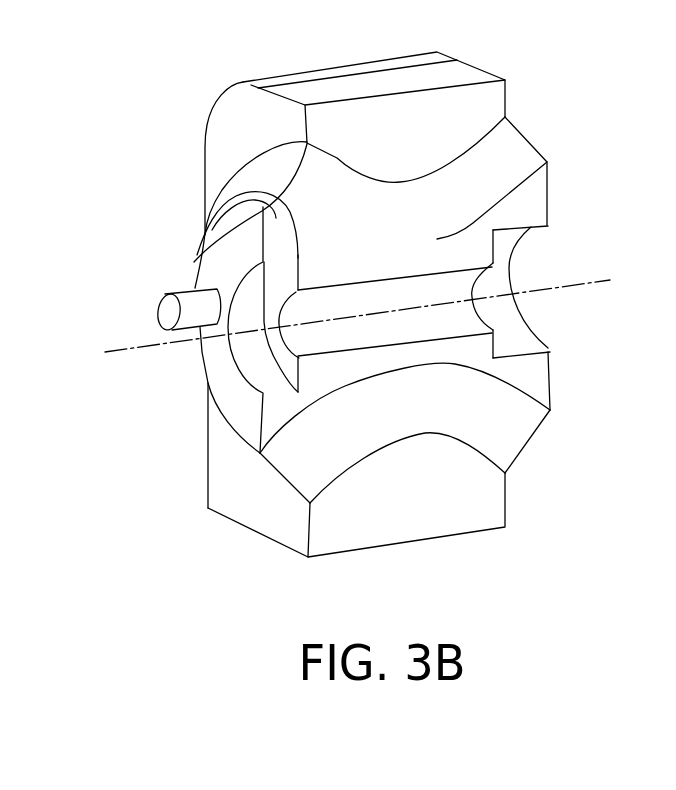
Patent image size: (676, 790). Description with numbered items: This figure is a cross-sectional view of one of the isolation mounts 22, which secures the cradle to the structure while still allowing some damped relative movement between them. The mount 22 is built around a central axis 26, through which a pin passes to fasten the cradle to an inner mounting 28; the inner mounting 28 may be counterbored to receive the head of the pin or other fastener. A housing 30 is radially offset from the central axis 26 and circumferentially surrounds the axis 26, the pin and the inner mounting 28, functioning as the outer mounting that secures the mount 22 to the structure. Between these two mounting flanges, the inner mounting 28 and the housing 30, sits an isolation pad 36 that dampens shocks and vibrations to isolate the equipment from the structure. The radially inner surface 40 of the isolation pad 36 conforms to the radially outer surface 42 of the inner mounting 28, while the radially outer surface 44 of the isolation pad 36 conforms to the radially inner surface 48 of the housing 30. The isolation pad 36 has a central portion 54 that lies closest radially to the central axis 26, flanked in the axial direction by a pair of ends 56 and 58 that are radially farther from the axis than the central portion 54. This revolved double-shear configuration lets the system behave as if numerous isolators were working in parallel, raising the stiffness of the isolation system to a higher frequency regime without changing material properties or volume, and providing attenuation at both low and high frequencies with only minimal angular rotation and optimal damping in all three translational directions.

The isolation mount 22 is at (201, 82).
The central axis 26 is at (562, 287).
The inner mounting 28 is at (527, 205).
The housing 30 is at (467, 113).
The isolation pad 36 is at (508, 152).
The radially inner surface 40 is at (196, 258).
The radially outer surface 42 is at (295, 160).
The radially outer surface 44 is at (336, 160).
The radially inner surface 48 is at (310, 146).
The central portion 54 is at (408, 408).
The end 56 is at (310, 458).
The end 58 is at (498, 423).